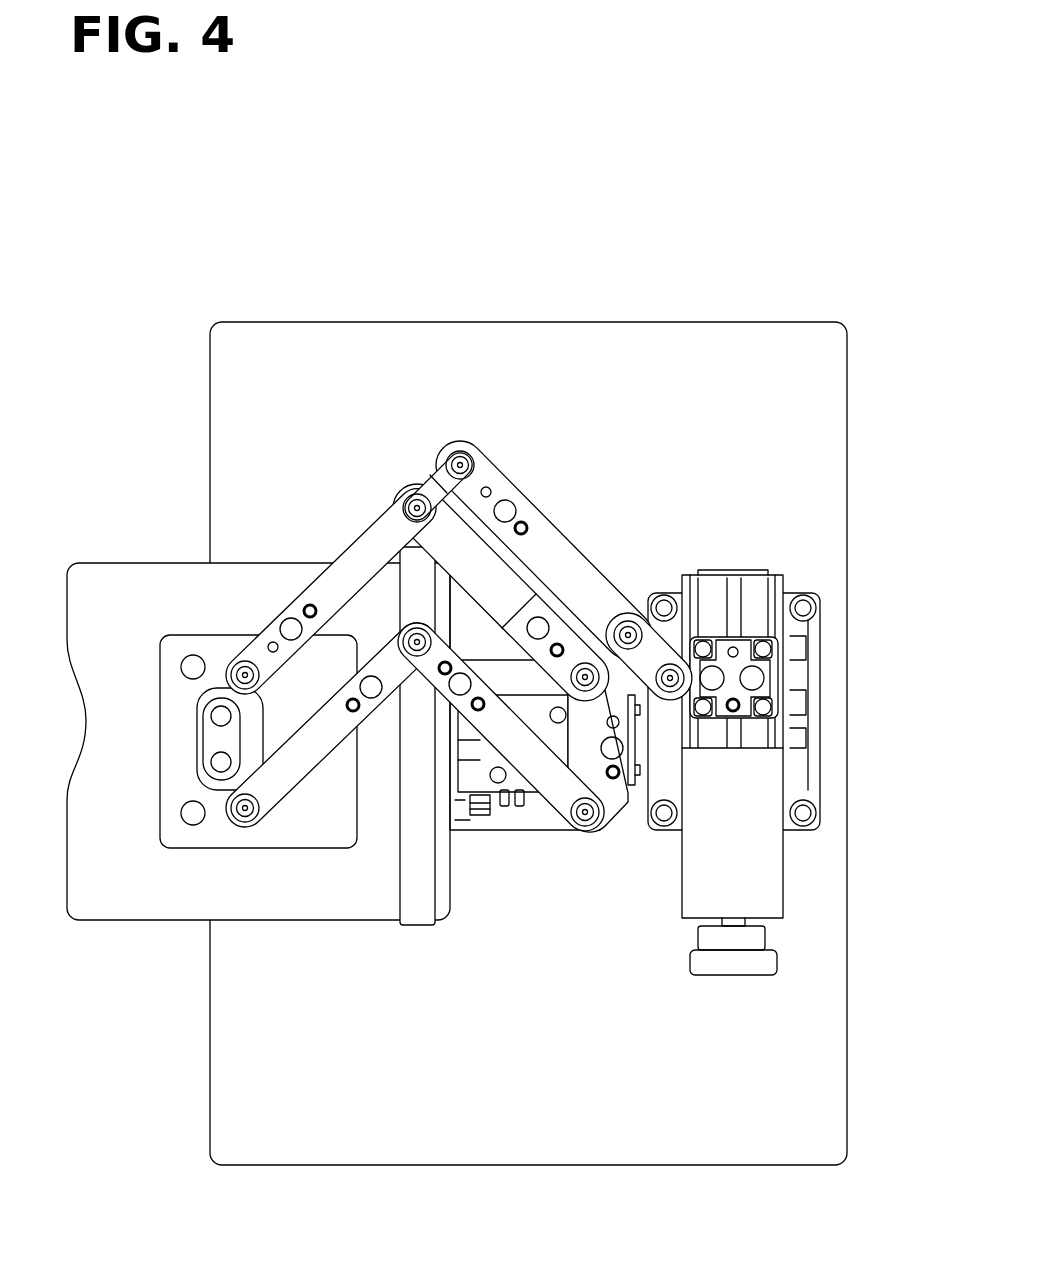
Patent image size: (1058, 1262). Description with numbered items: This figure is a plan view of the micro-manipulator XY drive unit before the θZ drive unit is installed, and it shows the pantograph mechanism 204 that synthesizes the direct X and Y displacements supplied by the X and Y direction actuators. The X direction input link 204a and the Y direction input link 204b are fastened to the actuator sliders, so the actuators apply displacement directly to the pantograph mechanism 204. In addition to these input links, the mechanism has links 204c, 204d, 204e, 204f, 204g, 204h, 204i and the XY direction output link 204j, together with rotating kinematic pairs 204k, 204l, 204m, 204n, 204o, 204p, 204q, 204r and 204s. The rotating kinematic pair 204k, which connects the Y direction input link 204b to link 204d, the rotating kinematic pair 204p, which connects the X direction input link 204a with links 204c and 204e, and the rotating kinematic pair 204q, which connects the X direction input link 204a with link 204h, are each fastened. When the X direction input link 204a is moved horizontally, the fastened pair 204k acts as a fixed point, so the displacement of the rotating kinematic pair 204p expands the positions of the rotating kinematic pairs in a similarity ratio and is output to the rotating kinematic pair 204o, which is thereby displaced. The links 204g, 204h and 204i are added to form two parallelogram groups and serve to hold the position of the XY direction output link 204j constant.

The pantograph mechanism 204 is at (487, 398).
The X direction input link 204a is at (623, 796).
The Y direction input link 204b is at (762, 648).
The link 204c is at (614, 635).
The link 204d is at (565, 532).
The link 204e is at (478, 535).
The link 204f is at (373, 525).
The link 204g is at (410, 607).
The link 204h is at (548, 785).
The link 204i is at (275, 800).
The XY direction output link 204j is at (192, 771).
The rotating kinematic pair 204k is at (745, 649).
The rotating kinematic pair 204l is at (672, 668).
The rotating kinematic pair 204m is at (464, 460).
The rotating kinematic pair 204n is at (418, 498).
The rotating kinematic pair 204o is at (238, 665).
The rotating kinematic pair 204p is at (633, 800).
The rotating kinematic pair 204q is at (590, 832).
The rotating kinematic pair 204r is at (416, 602).
The rotating kinematic pair 204s is at (240, 820).